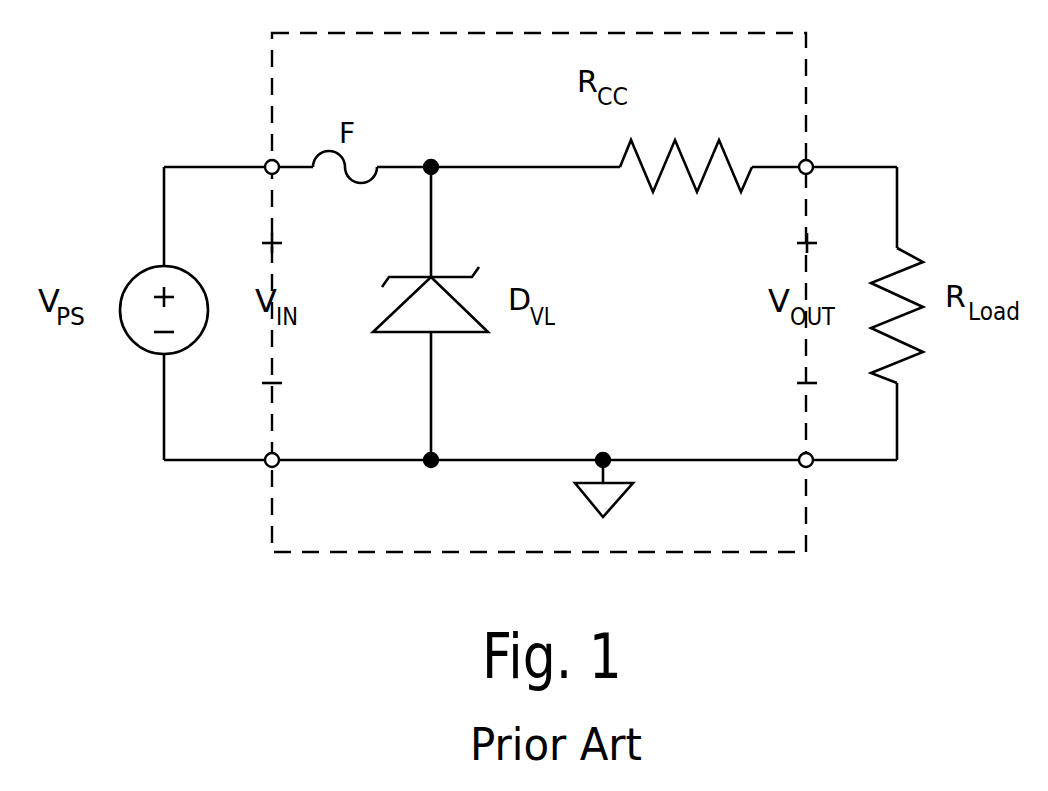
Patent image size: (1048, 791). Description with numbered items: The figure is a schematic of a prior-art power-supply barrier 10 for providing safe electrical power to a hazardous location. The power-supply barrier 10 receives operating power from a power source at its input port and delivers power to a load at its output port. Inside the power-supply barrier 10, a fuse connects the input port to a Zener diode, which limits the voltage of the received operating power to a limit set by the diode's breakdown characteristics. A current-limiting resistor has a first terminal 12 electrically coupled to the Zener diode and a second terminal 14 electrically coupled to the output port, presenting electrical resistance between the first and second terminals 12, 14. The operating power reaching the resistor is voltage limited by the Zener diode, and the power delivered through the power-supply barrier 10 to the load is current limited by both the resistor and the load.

The power-supply barrier 10 is at (436, 93).
The first terminal 12 is at (515, 155).
The second terminal 14 is at (768, 155).